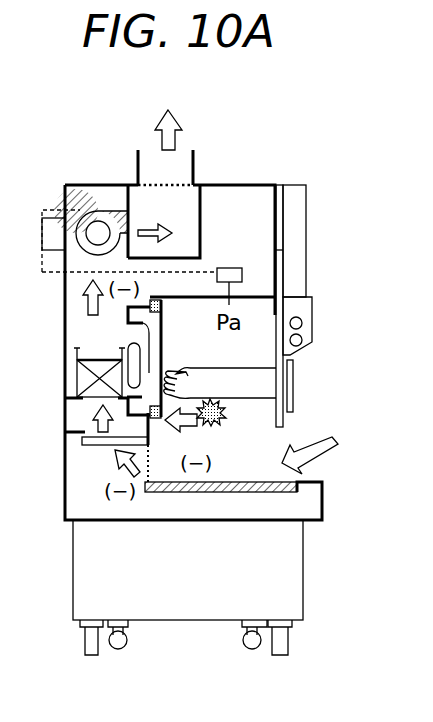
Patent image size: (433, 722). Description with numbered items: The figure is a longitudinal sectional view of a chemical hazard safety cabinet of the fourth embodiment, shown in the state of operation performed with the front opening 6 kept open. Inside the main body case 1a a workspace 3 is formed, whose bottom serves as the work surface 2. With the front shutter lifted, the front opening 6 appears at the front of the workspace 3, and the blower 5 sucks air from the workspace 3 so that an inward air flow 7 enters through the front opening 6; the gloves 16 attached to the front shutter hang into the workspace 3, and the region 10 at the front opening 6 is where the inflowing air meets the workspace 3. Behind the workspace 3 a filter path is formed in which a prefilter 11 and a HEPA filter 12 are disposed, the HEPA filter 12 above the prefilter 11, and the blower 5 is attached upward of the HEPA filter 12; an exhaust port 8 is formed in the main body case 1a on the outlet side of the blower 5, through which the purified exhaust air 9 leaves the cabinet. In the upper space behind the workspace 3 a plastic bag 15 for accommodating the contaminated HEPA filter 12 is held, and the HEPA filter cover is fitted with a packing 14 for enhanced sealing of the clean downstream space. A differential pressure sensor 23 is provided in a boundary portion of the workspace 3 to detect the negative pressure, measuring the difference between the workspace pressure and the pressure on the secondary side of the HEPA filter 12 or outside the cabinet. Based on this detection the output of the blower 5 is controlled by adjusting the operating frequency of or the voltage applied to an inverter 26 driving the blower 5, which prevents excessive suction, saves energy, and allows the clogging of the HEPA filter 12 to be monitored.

The main body case 1a is at (207, 185).
The work surface 2 is at (165, 490).
The workspace 3 is at (250, 322).
The blower 5 is at (98, 232).
The front opening 6 is at (265, 452).
The inward air flow 7 is at (298, 492).
The exhaust port 8 is at (138, 155).
The exhaust air 9 is at (150, 125).
The work opening 10 is at (208, 425).
The prefilter 11 is at (100, 445).
The HEPA filter 12 is at (97, 383).
The packing 14 is at (201, 262).
The plastic bag 15 is at (136, 343).
The gloves 16 is at (265, 385).
The differential pressure sensor 23 is at (237, 268).
The inverter 26 is at (50, 218).